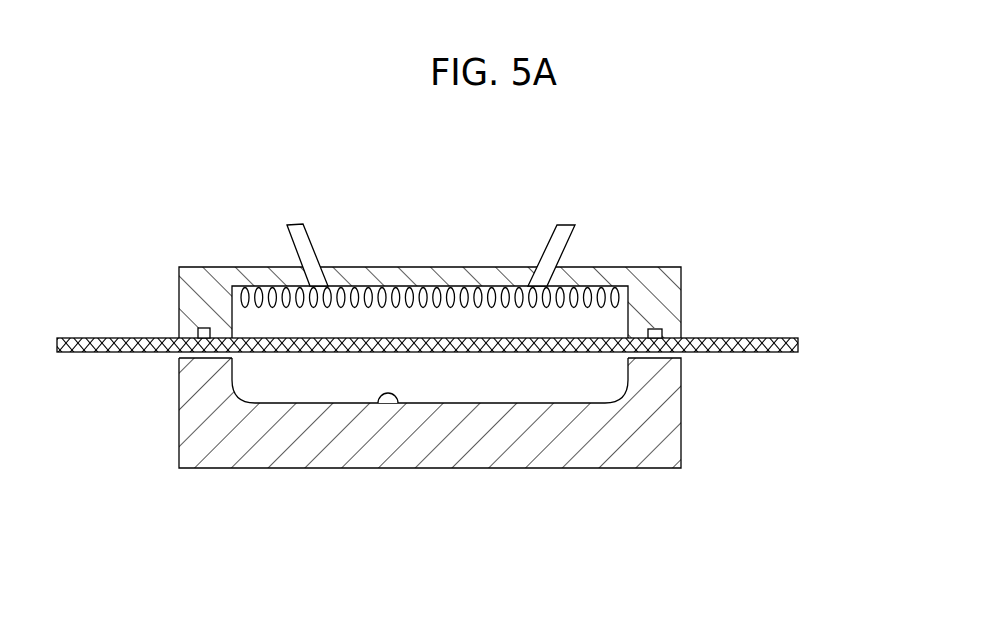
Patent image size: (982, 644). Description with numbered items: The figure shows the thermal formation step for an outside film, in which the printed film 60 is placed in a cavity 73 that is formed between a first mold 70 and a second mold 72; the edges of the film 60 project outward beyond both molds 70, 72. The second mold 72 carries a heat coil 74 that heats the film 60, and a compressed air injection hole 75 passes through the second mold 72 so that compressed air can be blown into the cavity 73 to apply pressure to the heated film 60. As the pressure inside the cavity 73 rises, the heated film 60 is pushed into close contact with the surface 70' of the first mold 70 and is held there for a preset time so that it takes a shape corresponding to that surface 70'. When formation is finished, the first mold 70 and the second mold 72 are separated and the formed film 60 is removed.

The printed film 60 is at (800, 335).
The first mold 70 is at (467, 413).
The surface of the first mold 70' is at (375, 455).
The second mold 72 is at (673, 302).
The cavity 73 is at (474, 388).
The heat coil 74 is at (412, 285).
The compressed air injection hole 75 is at (310, 248).